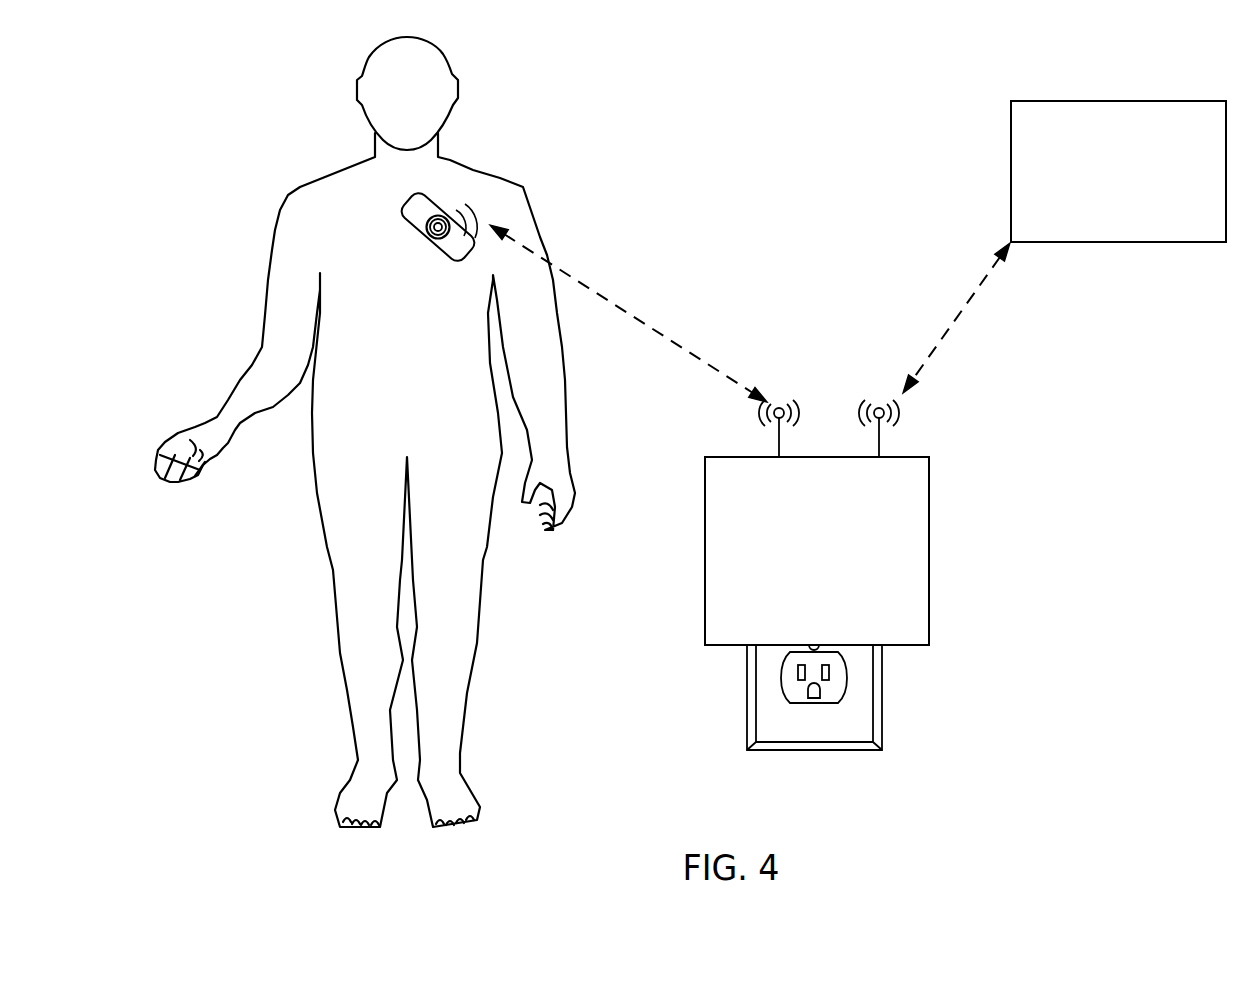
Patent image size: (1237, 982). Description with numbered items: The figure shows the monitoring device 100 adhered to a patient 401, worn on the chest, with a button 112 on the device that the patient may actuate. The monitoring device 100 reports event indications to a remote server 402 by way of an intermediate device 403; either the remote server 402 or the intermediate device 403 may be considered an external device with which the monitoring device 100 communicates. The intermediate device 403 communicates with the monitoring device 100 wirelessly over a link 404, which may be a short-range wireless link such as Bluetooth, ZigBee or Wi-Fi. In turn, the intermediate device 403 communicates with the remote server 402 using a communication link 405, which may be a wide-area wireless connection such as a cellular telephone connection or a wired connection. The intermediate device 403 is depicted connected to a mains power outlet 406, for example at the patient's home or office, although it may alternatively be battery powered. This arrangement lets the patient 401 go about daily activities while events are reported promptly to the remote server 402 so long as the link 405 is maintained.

The patient 401 is at (303, 210).
The monitoring device 100 is at (418, 212).
The button 112 is at (430, 253).
The remote server 402 is at (1021, 181).
The intermediate device 403 is at (922, 508).
The link 404 is at (618, 307).
The communication link 405 is at (957, 318).
The mains power outlet 406 is at (867, 693).